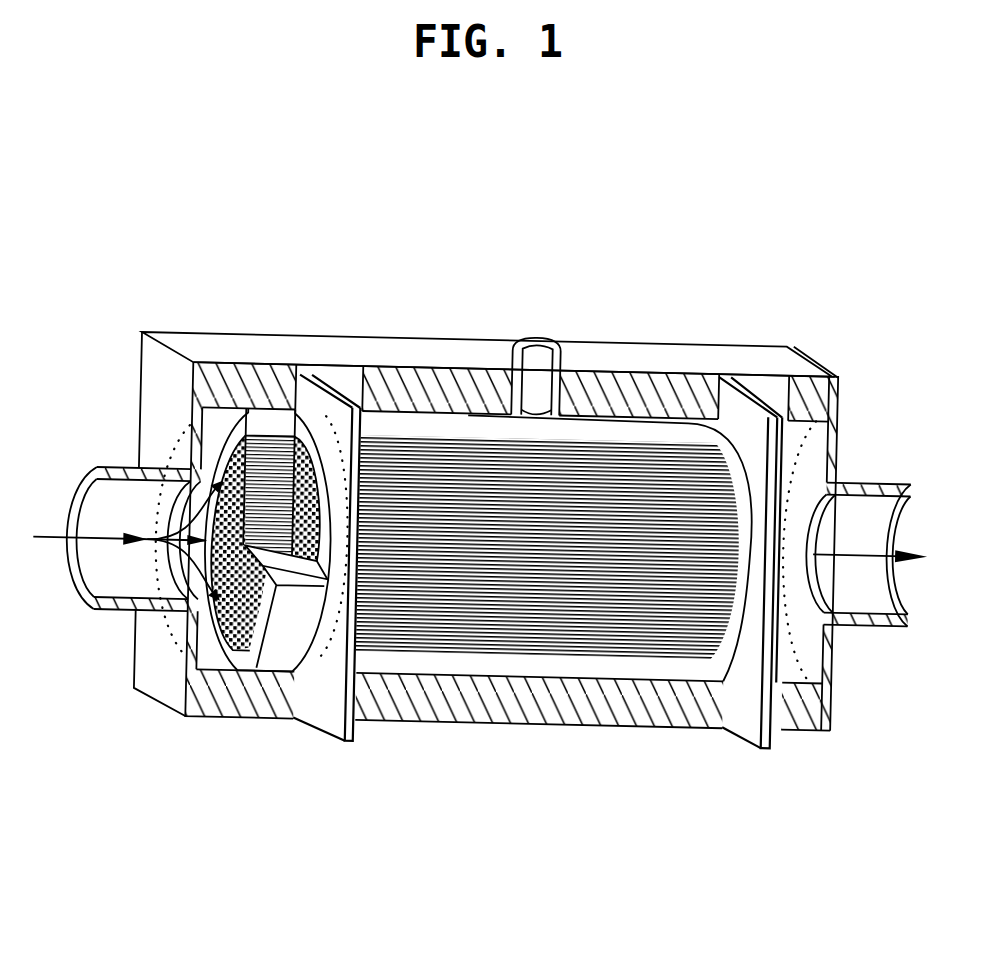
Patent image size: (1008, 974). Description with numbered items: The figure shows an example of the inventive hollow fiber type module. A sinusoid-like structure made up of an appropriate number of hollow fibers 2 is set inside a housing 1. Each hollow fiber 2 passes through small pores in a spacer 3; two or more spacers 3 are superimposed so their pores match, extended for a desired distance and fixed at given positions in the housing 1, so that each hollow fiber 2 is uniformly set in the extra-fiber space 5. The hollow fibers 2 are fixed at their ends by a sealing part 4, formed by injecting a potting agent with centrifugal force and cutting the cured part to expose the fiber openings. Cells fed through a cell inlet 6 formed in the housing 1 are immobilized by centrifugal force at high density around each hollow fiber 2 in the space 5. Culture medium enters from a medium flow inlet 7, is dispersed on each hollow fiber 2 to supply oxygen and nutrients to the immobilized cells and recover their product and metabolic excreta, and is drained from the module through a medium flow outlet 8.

The housing 1 is at (391, 374).
The hollow fiber 2 is at (461, 510).
The spacer 3 is at (335, 671).
The sealing part 4 is at (290, 622).
The extra-fiber space 5 is at (490, 654).
The cell inlet 6 is at (539, 366).
The medium flow inlet 7 is at (106, 518).
The medium flow outlet 8 is at (871, 510).